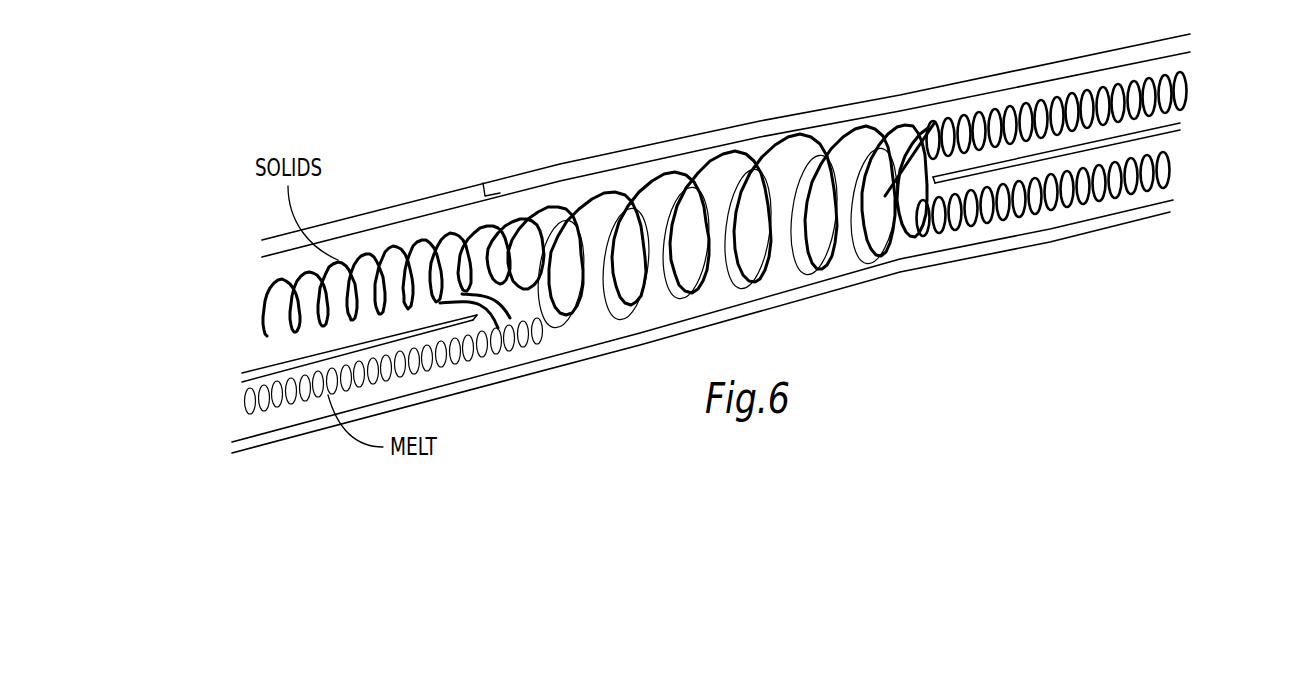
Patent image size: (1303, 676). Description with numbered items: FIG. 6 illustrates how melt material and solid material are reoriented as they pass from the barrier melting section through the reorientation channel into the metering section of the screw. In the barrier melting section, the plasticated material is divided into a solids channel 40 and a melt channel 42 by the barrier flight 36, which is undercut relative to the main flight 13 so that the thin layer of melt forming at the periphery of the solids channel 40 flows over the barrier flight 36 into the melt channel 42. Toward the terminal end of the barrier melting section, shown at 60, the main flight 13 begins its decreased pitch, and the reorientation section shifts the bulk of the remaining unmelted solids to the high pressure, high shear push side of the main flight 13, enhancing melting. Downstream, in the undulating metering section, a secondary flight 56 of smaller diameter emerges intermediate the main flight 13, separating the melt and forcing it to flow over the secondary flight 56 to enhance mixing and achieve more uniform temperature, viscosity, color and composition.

The main flight 13 is at (686, 152).
The solids channel 40 is at (435, 248).
The terminal end of the barrier melting section 60 is at (488, 186).
The barrier flight 36 is at (405, 332).
The melt channel 42 is at (490, 348).
The secondary flight 56 is at (1143, 133).